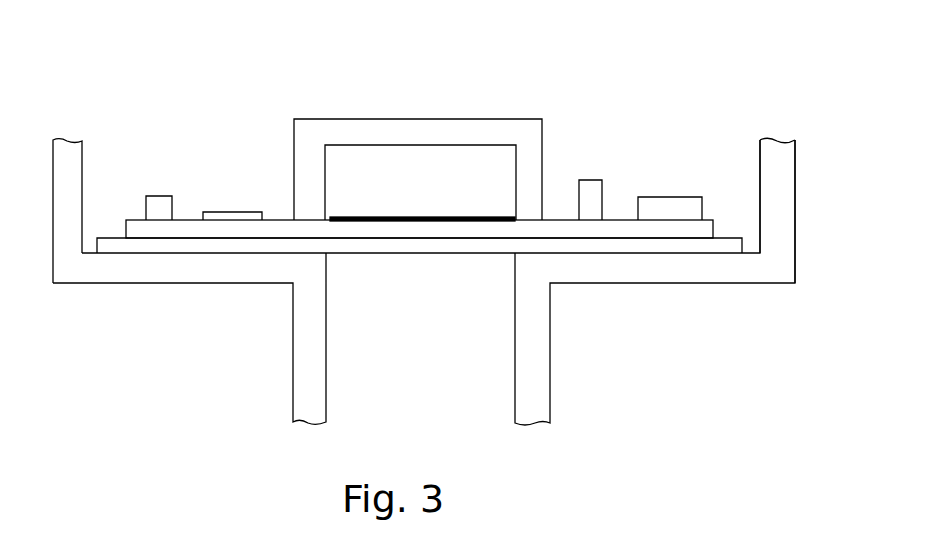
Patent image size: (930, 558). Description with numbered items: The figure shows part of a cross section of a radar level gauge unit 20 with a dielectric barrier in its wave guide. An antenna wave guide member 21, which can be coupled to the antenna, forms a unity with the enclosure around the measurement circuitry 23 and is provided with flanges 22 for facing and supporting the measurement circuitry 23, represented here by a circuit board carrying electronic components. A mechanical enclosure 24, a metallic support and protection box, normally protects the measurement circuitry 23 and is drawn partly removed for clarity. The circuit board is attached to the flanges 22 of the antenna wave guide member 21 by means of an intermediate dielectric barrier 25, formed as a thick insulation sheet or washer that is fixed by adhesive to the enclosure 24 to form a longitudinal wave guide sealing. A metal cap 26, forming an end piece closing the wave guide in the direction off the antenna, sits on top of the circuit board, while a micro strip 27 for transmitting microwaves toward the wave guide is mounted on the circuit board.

The radar level gauge unit 20 is at (808, 44).
The antenna wave guide member 21 is at (397, 400).
The flanges 22 is at (693, 293).
The measurement circuitry 23 is at (187, 207).
The mechanical enclosure 24 is at (801, 200).
The dielectric barrier 25 is at (447, 260).
The metal cap 26 is at (472, 122).
The micro strip 27 is at (385, 224).